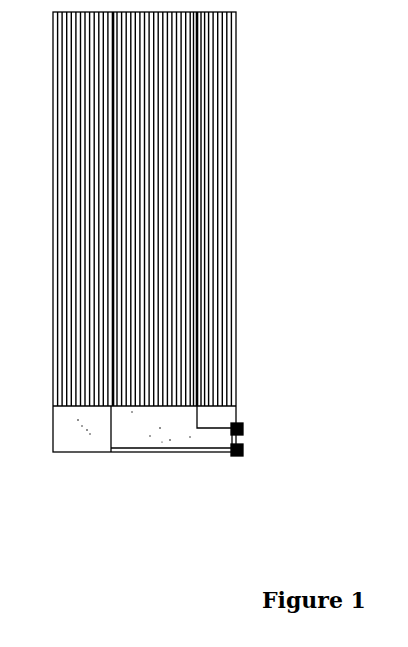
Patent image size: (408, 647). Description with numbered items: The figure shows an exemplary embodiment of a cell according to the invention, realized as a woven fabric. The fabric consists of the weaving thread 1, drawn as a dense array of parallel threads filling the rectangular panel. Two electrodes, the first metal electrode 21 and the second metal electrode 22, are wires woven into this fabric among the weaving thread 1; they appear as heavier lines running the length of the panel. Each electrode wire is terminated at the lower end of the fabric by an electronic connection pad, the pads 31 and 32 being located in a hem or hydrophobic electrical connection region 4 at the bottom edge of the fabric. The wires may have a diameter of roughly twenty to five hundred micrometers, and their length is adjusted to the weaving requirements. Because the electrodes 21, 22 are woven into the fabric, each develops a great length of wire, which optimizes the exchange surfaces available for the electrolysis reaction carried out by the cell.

The weaving thread 1 is at (222, 72).
The metal electrode Metal 1 21 is at (200, 118).
The metal electrode Metal 2 22 is at (115, 210).
The hydrophobic electrical connection region 4 is at (222, 418).
The electronic connection pad 31 is at (245, 435).
The electronic connection pad 32 is at (230, 457).